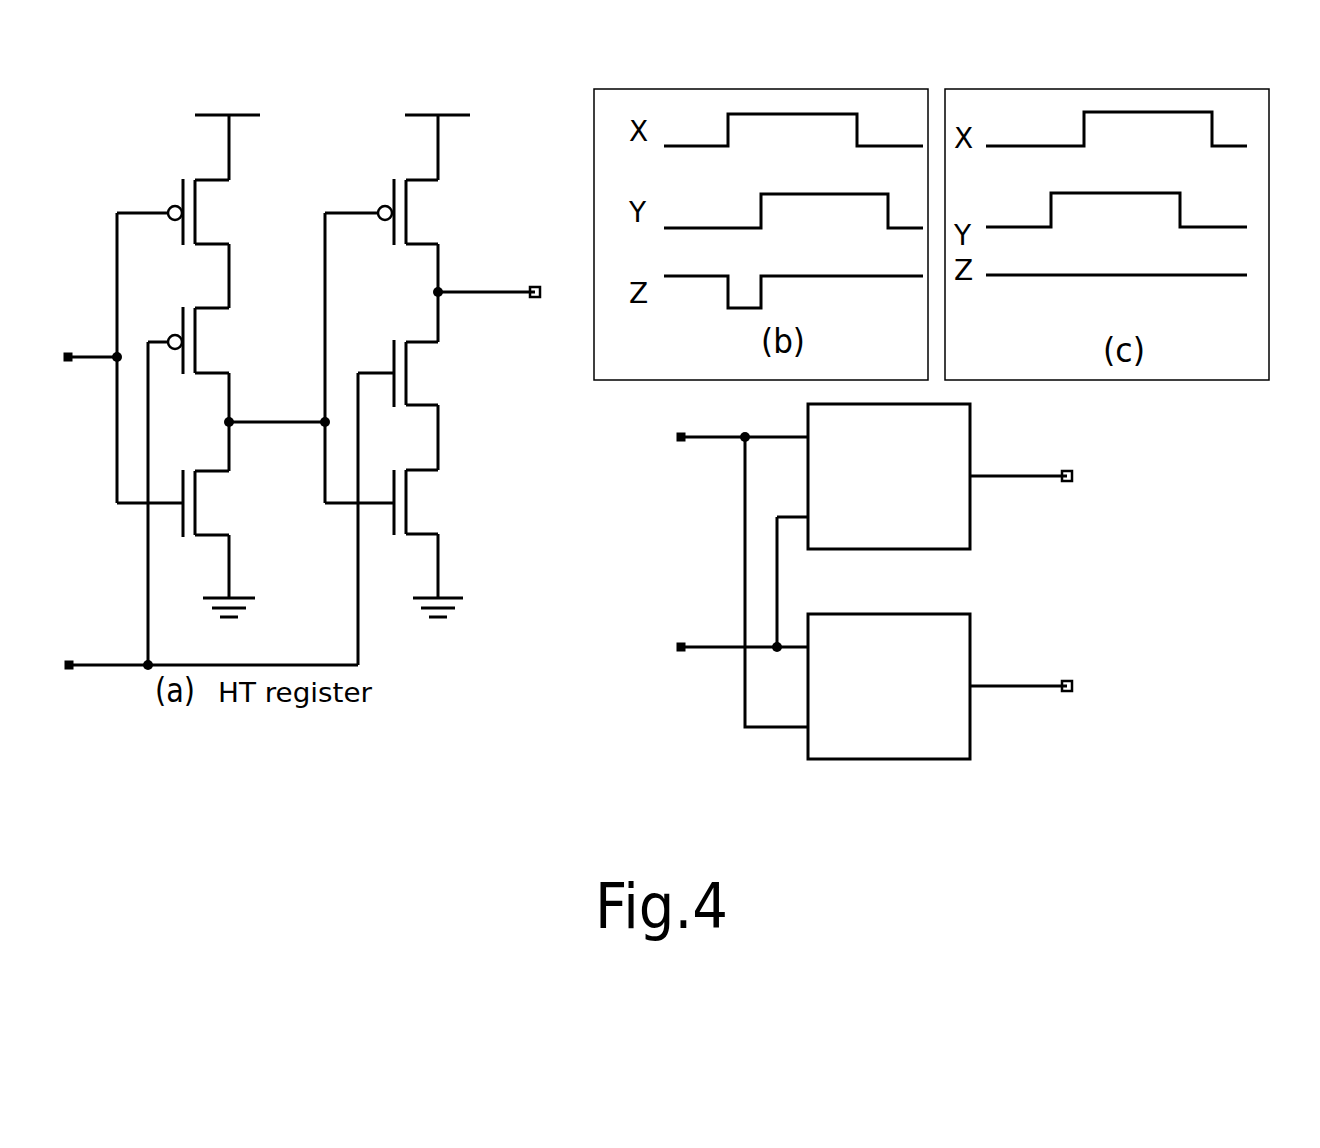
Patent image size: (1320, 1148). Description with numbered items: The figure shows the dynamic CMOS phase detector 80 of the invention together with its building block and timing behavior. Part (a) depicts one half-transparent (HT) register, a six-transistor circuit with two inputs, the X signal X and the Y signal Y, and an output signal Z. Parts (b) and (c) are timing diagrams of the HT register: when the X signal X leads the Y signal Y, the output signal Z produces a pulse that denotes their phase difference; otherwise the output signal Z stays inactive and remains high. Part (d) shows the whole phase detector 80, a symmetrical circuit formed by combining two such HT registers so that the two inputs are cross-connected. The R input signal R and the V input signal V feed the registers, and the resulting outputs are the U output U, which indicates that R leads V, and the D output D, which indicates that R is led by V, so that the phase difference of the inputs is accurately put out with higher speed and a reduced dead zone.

The phase detector 80 is at (875, 600).
The X signal X is at (196, 665).
The Y signal Y is at (78, 357).
The output signal Z is at (500, 293).
The R input signal R is at (727, 437).
The V input signal V is at (727, 647).
The U output U is at (1036, 477).
The D output D is at (1037, 687).